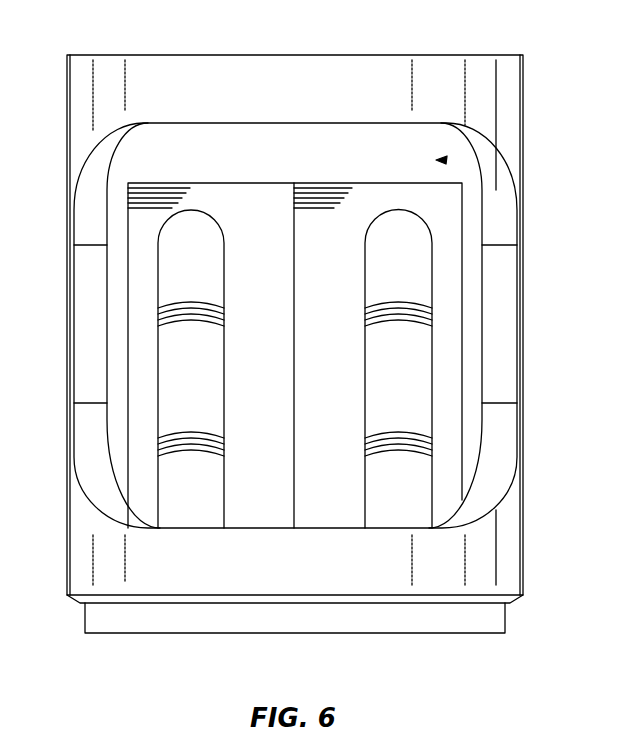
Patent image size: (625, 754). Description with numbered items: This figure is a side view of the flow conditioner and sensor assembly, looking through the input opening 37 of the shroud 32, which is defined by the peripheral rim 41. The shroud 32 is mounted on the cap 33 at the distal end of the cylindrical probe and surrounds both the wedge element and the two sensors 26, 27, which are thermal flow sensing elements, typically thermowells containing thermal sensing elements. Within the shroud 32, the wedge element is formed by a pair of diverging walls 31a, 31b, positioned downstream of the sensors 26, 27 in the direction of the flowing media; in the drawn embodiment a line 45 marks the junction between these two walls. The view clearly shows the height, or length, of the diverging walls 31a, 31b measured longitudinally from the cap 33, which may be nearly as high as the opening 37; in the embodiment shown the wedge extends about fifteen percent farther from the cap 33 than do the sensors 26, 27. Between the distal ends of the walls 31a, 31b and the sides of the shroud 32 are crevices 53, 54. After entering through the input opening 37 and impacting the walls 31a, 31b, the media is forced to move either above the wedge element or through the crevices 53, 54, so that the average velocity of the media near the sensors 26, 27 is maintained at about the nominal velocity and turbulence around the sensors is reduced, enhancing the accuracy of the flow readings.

The sensor 26 is at (180, 380).
The sensor 27 is at (410, 380).
The diverging wall 31a is at (260, 272).
The diverging wall 31b is at (330, 272).
The shroud 32 is at (202, 75).
The cap 33 is at (197, 622).
The input opening 37 is at (444, 160).
The peripheral rim 41 is at (90, 202).
The divider / core gap 45 is at (295, 470).
The crevice 53 is at (115, 305).
The crevice 54 is at (475, 300).